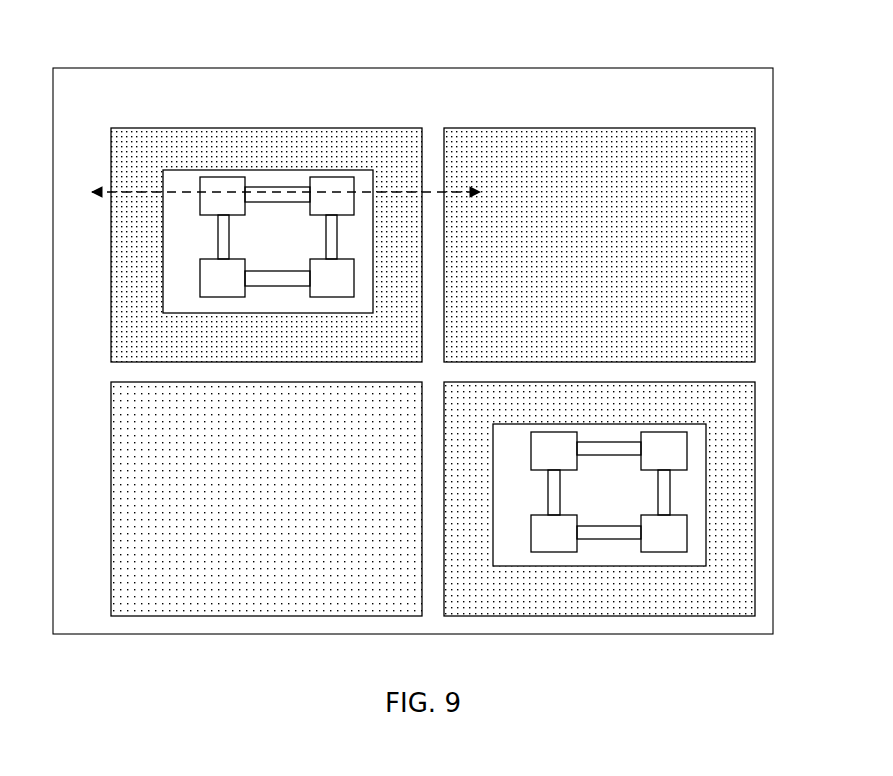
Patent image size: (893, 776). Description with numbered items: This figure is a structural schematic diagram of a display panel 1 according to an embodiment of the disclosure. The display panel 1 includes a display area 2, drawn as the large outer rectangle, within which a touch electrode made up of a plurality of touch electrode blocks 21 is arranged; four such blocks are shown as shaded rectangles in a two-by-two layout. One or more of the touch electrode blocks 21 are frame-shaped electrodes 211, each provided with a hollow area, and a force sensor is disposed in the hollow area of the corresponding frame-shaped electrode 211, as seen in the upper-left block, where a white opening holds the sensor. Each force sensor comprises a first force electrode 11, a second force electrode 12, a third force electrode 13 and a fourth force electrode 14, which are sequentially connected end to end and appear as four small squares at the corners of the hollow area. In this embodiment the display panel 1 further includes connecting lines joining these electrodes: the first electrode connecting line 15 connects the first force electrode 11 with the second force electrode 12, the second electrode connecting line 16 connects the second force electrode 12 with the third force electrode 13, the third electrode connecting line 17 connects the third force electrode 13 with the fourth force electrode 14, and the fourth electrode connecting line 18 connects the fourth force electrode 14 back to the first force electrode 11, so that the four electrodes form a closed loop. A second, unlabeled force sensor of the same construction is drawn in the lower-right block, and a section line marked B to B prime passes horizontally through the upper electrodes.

The display panel 1 is at (785, 23).
The display area 2 is at (697, 68).
The touch electrode block 21 is at (637, 183).
The frame-shaped electrode 211 is at (148, 143).
The first force electrode 11 is at (222, 177).
The second force electrode 12 is at (198, 278).
The third force electrode 13 is at (354, 284).
The fourth force electrode 14 is at (333, 177).
The first electrode connecting line 15 is at (217, 252).
The second electrode connecting line 16 is at (277, 287).
The third electrode connecting line 17 is at (338, 240).
The fourth electrode connecting line 18 is at (279, 187).